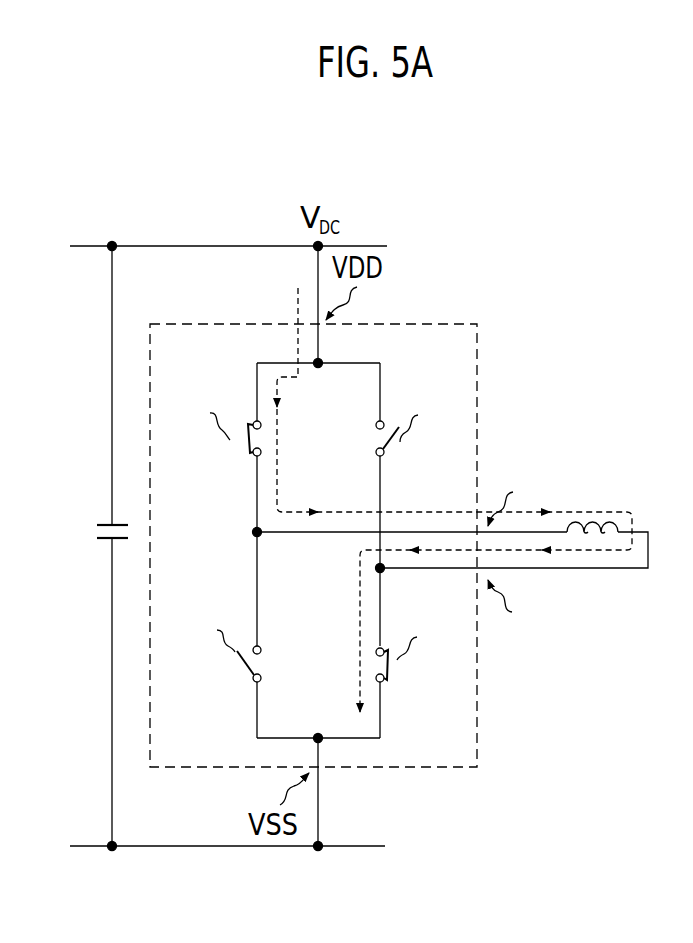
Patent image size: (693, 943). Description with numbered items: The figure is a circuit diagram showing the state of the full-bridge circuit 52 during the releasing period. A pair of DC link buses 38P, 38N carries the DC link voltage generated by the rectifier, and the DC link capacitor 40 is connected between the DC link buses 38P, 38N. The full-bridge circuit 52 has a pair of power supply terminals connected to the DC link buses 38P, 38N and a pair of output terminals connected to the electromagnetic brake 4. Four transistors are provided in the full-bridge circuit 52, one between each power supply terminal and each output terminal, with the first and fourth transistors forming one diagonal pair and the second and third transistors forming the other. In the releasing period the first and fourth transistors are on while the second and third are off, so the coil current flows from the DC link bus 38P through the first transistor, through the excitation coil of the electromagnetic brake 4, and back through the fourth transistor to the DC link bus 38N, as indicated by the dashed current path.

The DC link bus 38P is at (150, 245).
The DC link bus 38N is at (145, 848).
The DC link capacitor 40 is at (86, 531).
The full-bridge circuit 52 is at (433, 324).
The electromagnetic brake 4 is at (630, 493).